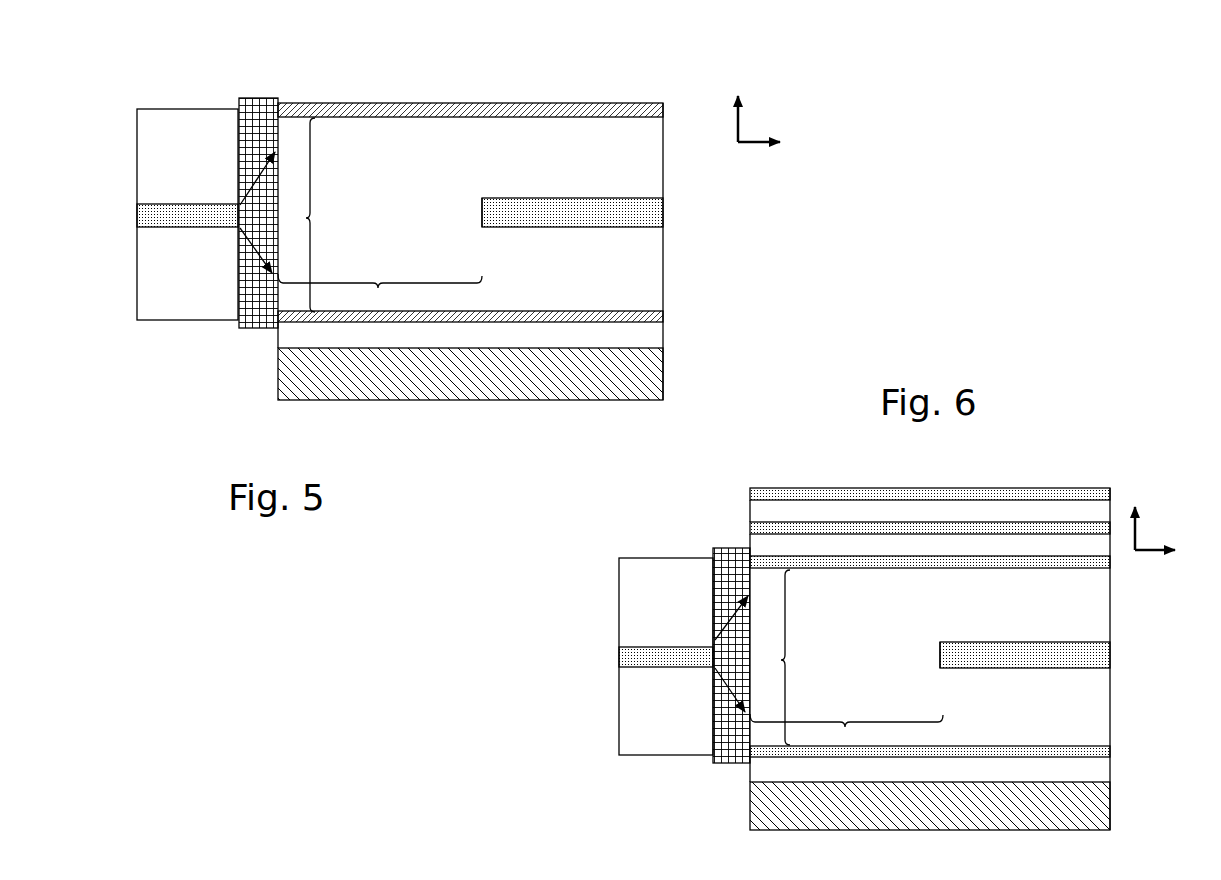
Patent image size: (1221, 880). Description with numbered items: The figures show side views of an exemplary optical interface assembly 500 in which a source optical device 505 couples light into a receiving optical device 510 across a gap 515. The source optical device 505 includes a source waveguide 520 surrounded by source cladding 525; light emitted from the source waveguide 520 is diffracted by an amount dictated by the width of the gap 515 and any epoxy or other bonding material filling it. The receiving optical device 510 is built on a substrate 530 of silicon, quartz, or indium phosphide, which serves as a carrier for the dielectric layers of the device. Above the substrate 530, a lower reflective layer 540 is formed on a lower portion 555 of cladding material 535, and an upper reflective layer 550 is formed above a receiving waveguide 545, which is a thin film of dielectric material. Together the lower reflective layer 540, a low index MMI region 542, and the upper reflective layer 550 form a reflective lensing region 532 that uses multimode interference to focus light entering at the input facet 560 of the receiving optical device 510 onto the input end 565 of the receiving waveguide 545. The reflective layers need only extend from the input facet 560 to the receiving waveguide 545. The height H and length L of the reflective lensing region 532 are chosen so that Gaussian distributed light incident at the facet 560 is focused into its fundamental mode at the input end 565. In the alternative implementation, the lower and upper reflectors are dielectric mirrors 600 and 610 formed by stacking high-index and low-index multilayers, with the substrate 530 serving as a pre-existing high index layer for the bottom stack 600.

In FIG. 5, the optical interface assembly 500 is at (243, 394).
In FIG. 6, the optical interface assembly 500 is at (660, 808).
In FIG. 5, the source optical device 505 is at (131, 277).
In FIG. 6, the source optical device 505 is at (612, 720).
In FIG. 5, the receiving optical device 510 is at (614, 90).
In FIG. 6, the receiving optical device 510 is at (1012, 480).
In FIG. 5, the gap 515 is at (257, 342).
In FIG. 6, the gap 515 is at (733, 772).
In FIG. 5, the source waveguide 520 is at (153, 213).
In FIG. 6, the source waveguide 520 is at (640, 655).
In FIG. 5, the source cladding 525 is at (193, 127).
In FIG. 6, the source cladding 525 is at (687, 577).
In FIG. 5, the substrate 530 is at (410, 382).
In FIG. 6, the substrate 530 is at (828, 808).
In FIG. 5, the reflective lensing region 532 is at (424, 90).
In FIG. 6, the reflective lensing region 532 is at (803, 735).
In FIG. 5, the cladding material 535 is at (650, 255).
In FIG. 6, the cladding material 535 is at (1088, 693).
In FIG. 5, the lower reflective layer 540 is at (664, 318).
In FIG. 5, the low index MMI region 542 is at (400, 167).
In FIG. 6, the low index MMI region 542 is at (843, 610).
In FIG. 5, the receiving waveguide 545 is at (645, 212).
In FIG. 6, the receiving waveguide 545 is at (1085, 655).
In FIG. 5, the upper reflective layer 550 is at (338, 108).
In FIG. 5, the lower portion of cladding material 555 is at (343, 333).
In FIG. 5, the input facet 560 is at (270, 192).
In FIG. 6, the input facet 560 is at (745, 620).
In FIG. 5, the input end of receiving waveguide 565 is at (470, 212).
In FIG. 6, the input end of receiving waveguide 565 is at (930, 652).
In FIG. 6, the dielectric mirror 600 is at (1075, 770).
In FIG. 6, the dielectric mirror 610 is at (800, 482).